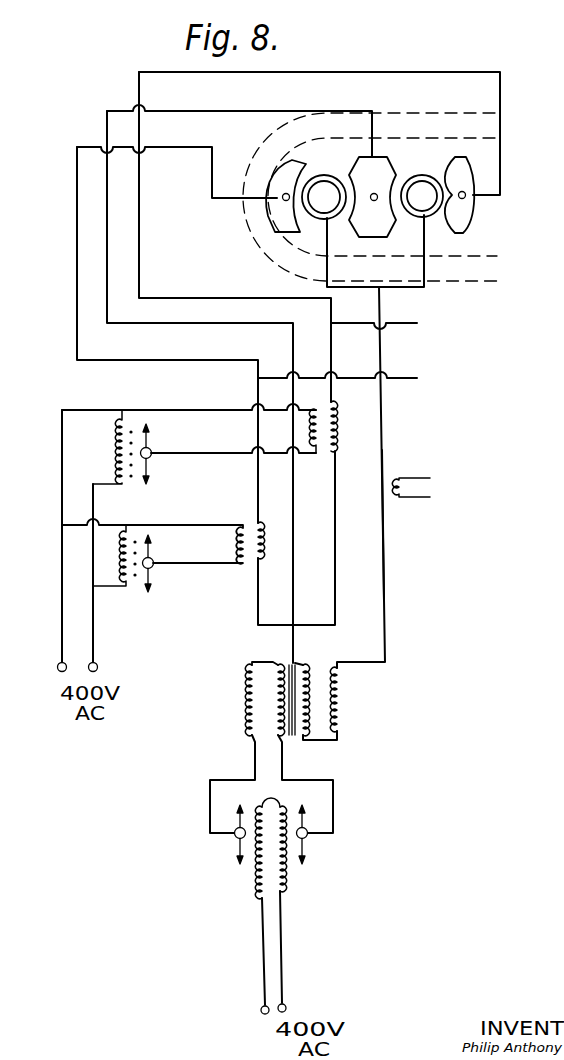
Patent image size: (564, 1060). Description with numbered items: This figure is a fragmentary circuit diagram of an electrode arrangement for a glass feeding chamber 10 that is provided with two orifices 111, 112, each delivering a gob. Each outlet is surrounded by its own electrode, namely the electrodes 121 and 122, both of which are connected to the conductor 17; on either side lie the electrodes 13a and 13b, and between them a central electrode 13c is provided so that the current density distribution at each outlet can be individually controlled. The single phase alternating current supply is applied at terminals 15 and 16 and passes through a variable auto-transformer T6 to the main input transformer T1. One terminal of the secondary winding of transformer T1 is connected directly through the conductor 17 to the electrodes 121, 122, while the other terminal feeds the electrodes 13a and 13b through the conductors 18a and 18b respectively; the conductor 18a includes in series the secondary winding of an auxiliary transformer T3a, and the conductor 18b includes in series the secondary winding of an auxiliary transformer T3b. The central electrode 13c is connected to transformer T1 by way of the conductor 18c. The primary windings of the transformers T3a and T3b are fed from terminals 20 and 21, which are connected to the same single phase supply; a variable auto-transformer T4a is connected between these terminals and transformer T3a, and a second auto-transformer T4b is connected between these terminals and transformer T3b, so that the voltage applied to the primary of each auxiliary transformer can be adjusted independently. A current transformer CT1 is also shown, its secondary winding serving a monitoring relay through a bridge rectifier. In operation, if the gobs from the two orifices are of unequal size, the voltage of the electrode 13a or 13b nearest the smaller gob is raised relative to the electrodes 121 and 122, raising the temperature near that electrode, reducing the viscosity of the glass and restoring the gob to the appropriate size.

The feeding chamber 10 is at (319, 176).
The orifice 111 is at (318, 214).
The orifice 112 is at (427, 204).
The electrode 121 is at (329, 221).
The electrode 122 is at (412, 220).
The electrode 13a is at (277, 216).
The electrode 13b is at (476, 205).
The central electrode 13c is at (380, 150).
The terminal 15 is at (260, 1011).
The terminal 16 is at (286, 1006).
The conductor 17 is at (386, 577).
The conductor 18a is at (257, 367).
The conductor 18b is at (333, 338).
The conductor 18c is at (295, 338).
The terminal 20 is at (57, 668).
The terminal 21 is at (98, 667).
The main input transformer T1 is at (273, 735).
The auxiliary transformer T3a is at (163, 559).
The auxiliary transformer T3b is at (333, 418).
The variable auto-transformer T4a is at (130, 596).
The auto-transformer T4b is at (137, 400).
The variable auto-transformer T6 is at (303, 868).
The current transformer CT1 is at (396, 476).